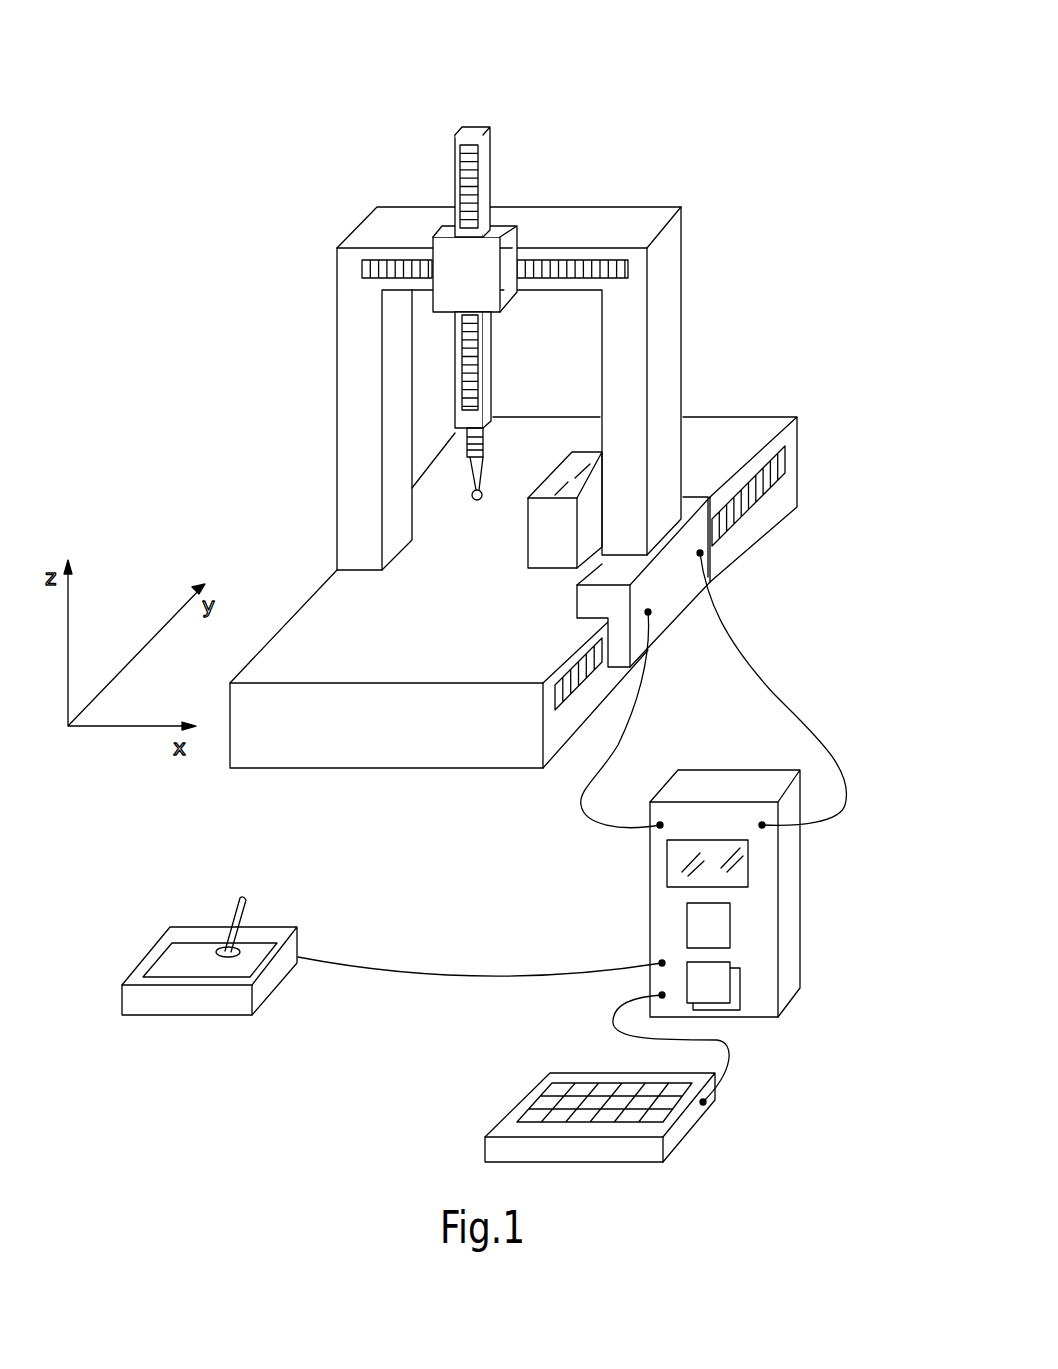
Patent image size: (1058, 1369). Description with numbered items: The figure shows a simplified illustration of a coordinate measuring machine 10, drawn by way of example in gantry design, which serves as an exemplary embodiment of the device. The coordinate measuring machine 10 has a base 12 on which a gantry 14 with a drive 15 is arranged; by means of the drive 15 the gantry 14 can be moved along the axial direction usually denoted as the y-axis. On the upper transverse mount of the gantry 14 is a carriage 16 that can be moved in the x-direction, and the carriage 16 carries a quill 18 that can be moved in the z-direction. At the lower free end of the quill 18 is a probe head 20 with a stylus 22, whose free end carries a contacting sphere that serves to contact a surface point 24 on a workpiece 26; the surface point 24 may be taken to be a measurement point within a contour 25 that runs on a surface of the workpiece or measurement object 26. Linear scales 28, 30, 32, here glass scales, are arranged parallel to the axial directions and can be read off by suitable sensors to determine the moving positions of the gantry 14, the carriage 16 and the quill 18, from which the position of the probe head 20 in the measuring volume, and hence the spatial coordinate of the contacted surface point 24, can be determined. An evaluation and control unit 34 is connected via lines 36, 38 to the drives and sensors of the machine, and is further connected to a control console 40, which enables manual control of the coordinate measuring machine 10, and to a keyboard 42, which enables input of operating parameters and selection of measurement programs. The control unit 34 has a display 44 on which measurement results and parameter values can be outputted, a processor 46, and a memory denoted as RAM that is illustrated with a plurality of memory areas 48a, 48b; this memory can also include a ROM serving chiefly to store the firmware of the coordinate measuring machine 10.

The coordinate measuring machine 10 is at (263, 482).
The base 12 is at (340, 642).
The gantry 14 is at (662, 357).
The drive 15 is at (704, 552).
The carriage 16 is at (520, 180).
The quill 18 is at (465, 127).
The probe head 20 is at (458, 462).
The stylus 22 is at (472, 478).
The surface point 24 is at (572, 478).
The contour 25 is at (573, 452).
The workpiece 26 is at (538, 480).
The linear scale 28 is at (787, 461).
The linear scale 30 is at (588, 258).
The linear scale 32 is at (452, 160).
The evaluation and control unit 34 is at (803, 904).
The line 36 is at (774, 692).
The line 38 is at (640, 700).
The control console 40 is at (273, 978).
The keyboard 42 is at (688, 1137).
The display 44 is at (667, 877).
The processor 46 is at (687, 932).
The memory area 48a is at (717, 1000).
The memory area 48b is at (740, 978).